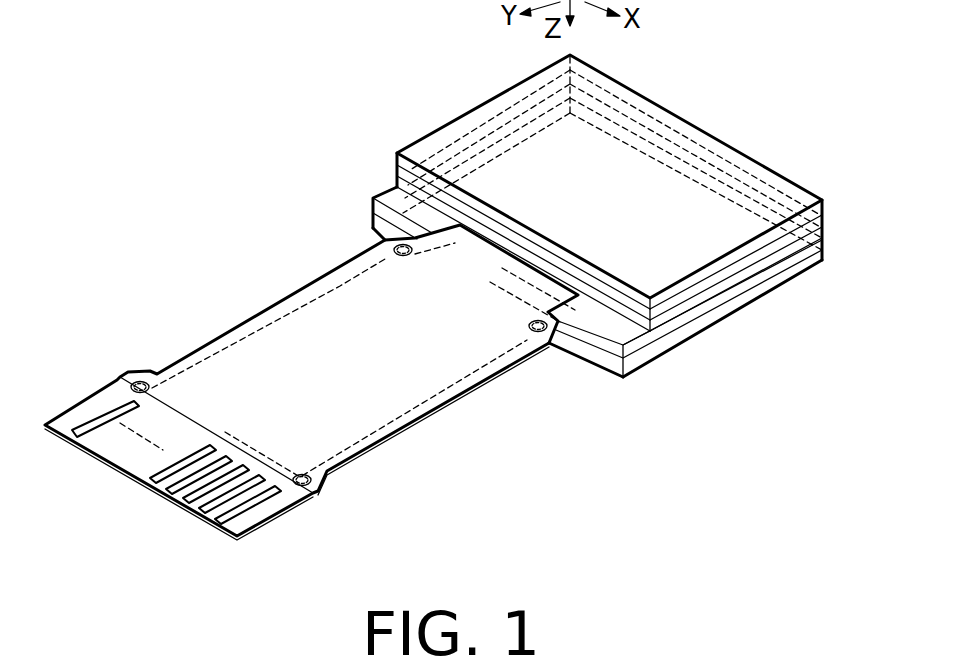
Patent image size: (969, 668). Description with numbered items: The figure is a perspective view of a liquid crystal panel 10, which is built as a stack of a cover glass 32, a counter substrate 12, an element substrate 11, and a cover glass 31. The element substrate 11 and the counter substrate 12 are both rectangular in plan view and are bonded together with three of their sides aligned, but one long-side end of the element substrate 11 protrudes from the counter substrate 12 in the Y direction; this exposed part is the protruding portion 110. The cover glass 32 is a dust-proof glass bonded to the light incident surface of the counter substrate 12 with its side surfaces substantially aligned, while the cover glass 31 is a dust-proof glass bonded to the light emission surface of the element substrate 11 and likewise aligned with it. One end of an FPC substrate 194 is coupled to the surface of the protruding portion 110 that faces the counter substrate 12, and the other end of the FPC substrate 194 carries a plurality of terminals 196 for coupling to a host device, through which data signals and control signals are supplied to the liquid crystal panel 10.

The liquid crystal panel 10 is at (584, 221).
The element substrate 11 is at (584, 273).
The counter substrate 12 is at (396, 177).
The cover glass 31 is at (826, 257).
The cover glass 32 is at (825, 203).
The protruding portion 110 is at (590, 314).
The FPC substrate 194 is at (297, 393).
The terminals 196 is at (217, 513).